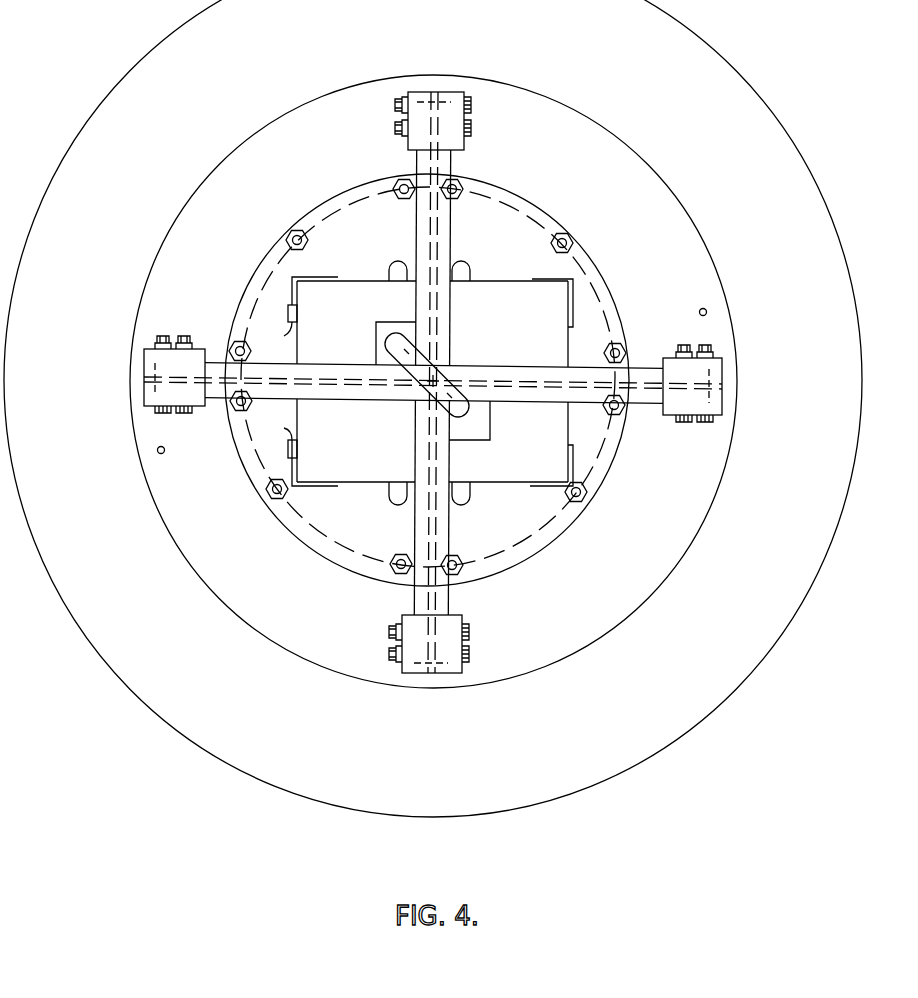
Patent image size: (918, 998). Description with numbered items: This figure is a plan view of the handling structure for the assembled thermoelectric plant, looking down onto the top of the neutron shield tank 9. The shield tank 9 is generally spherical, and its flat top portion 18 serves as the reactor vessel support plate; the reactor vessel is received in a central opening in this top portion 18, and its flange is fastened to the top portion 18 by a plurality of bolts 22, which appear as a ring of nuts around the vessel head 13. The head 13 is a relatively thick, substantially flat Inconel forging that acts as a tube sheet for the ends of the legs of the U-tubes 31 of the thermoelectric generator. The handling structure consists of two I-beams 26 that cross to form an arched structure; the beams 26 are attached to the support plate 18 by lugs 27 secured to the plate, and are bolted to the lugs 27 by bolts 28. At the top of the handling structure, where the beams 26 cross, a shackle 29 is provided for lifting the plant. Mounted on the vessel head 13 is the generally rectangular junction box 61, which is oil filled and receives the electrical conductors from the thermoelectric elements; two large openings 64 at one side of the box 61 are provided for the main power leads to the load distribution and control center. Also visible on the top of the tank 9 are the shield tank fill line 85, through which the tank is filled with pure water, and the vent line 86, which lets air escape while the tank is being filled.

The neutron shield tank 9 is at (170, 725).
The flat top portion 18 is at (213, 590).
The head 13 is at (346, 568).
The bolts 22 is at (402, 194).
The I-beams 26 is at (592, 403).
The lugs 27 is at (463, 99).
The bolts 28 is at (471, 133).
The junction box 61 is at (560, 347).
The large openings 64 is at (292, 325).
The U-tubes 31 is at (512, 261).
The shackle 29 is at (434, 379).
The shield tank fill line 85 is at (700, 310).
The vent line 86 is at (164, 453).